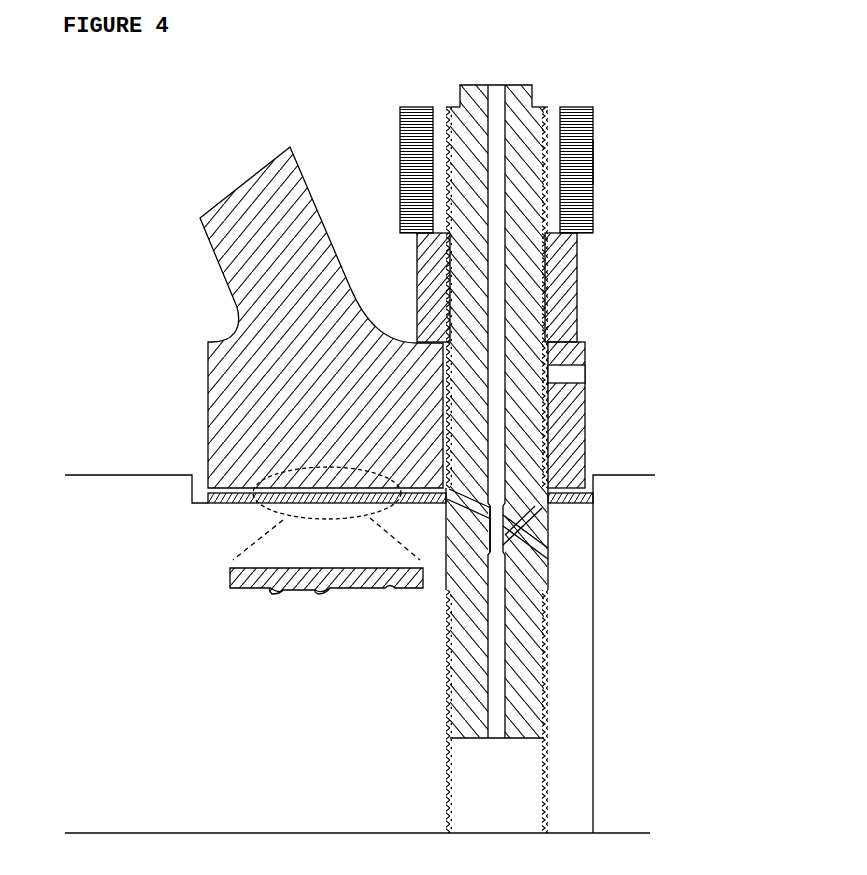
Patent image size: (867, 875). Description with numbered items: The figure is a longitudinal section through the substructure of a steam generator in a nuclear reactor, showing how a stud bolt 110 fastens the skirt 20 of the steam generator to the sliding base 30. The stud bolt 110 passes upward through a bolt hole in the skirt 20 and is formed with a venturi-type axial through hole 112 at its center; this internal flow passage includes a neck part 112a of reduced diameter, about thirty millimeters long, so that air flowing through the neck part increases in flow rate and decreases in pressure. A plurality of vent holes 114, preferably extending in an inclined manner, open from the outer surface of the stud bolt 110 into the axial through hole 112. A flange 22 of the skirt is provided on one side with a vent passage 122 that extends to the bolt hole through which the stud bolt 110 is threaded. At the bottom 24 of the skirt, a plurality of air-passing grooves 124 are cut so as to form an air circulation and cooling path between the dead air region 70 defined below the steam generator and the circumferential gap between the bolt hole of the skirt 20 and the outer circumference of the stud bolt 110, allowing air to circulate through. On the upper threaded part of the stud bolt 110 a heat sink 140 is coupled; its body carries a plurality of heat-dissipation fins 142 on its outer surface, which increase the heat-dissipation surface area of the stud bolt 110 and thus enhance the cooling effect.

The skirt 20 is at (338, 217).
The flange 22 is at (583, 430).
The bottom 24 is at (250, 590).
The sliding base 30 is at (153, 576).
The dead air region 70 is at (133, 383).
The stud bolt 110 is at (562, 630).
The axial through hole 112 is at (497, 82).
The neck part 112a is at (500, 516).
The vent holes 114 is at (547, 553).
The vent passage 122 is at (578, 374).
The air-passing grooves 124 is at (275, 590).
The heat sink 140 is at (573, 96).
The heat-dissipation fins 142 is at (580, 148).